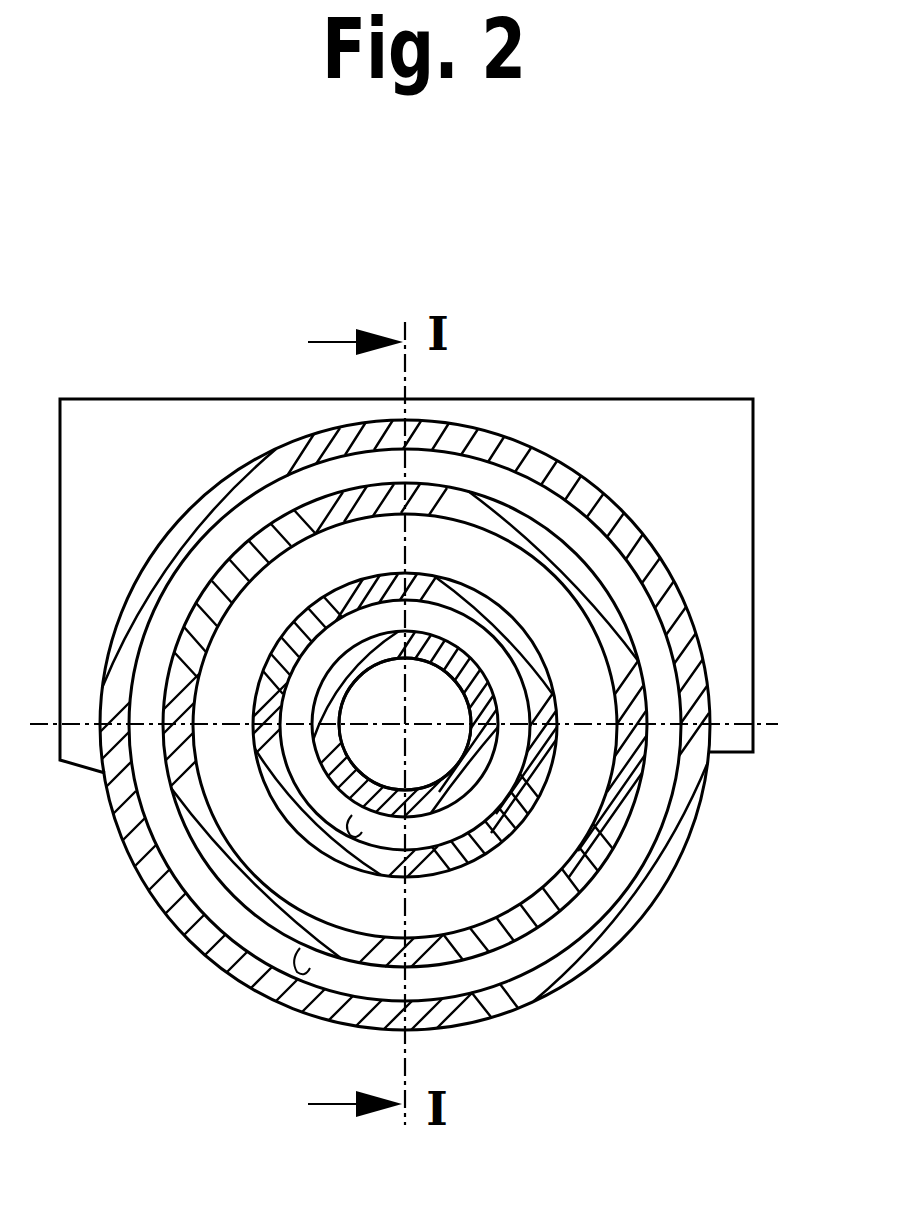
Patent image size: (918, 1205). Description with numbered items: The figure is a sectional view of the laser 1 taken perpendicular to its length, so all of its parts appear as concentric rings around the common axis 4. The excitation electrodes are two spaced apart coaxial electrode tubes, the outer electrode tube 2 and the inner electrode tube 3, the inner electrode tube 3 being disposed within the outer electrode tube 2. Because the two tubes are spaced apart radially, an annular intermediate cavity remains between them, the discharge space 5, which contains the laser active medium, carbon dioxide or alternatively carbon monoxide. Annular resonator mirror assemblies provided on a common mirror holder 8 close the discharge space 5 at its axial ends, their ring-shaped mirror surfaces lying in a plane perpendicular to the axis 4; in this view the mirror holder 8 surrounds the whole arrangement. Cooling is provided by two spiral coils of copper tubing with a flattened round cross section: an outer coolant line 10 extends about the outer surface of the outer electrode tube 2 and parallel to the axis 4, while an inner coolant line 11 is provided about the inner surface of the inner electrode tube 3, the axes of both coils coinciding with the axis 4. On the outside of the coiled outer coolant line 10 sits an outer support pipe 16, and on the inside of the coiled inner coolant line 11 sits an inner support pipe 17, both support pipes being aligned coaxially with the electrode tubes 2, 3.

The laser 1 is at (661, 385).
The common mirror holder 8 is at (700, 467).
The outer support pipe 16 is at (648, 913).
The outer electrode tube 2 is at (630, 737).
The outer coolant line 10 is at (183, 863).
The inner electrode tube 3 is at (272, 733).
The discharge space 5 is at (287, 870).
The inner support pipe 17 is at (475, 743).
The inner coolant line 11 is at (472, 805).
The common axis 4 is at (408, 724).